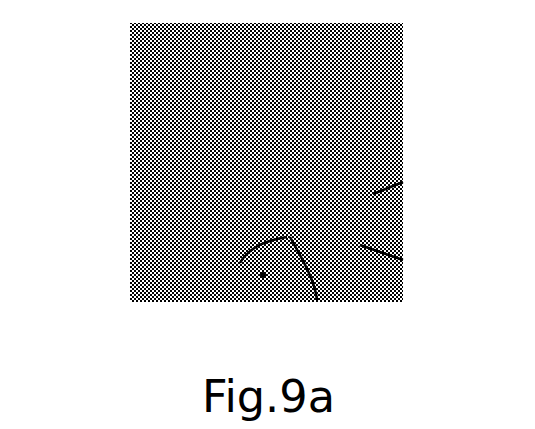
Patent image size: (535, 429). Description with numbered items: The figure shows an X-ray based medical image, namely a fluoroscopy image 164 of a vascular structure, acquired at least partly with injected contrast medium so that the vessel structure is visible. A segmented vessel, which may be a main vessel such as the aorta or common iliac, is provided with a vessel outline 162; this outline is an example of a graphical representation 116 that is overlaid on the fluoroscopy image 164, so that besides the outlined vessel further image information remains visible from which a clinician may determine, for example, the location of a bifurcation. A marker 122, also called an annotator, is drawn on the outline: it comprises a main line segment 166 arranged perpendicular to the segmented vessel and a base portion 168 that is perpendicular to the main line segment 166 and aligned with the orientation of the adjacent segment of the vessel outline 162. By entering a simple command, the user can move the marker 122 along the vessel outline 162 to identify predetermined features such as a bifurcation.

The fluoroscopy image 164 is at (120, 168).
The graphical representation 116 is at (403, 182).
The vessel outline 162 is at (403, 260).
The main line segment 166 is at (240, 263).
The marker 122 is at (263, 276).
The base portion 168 is at (317, 300).